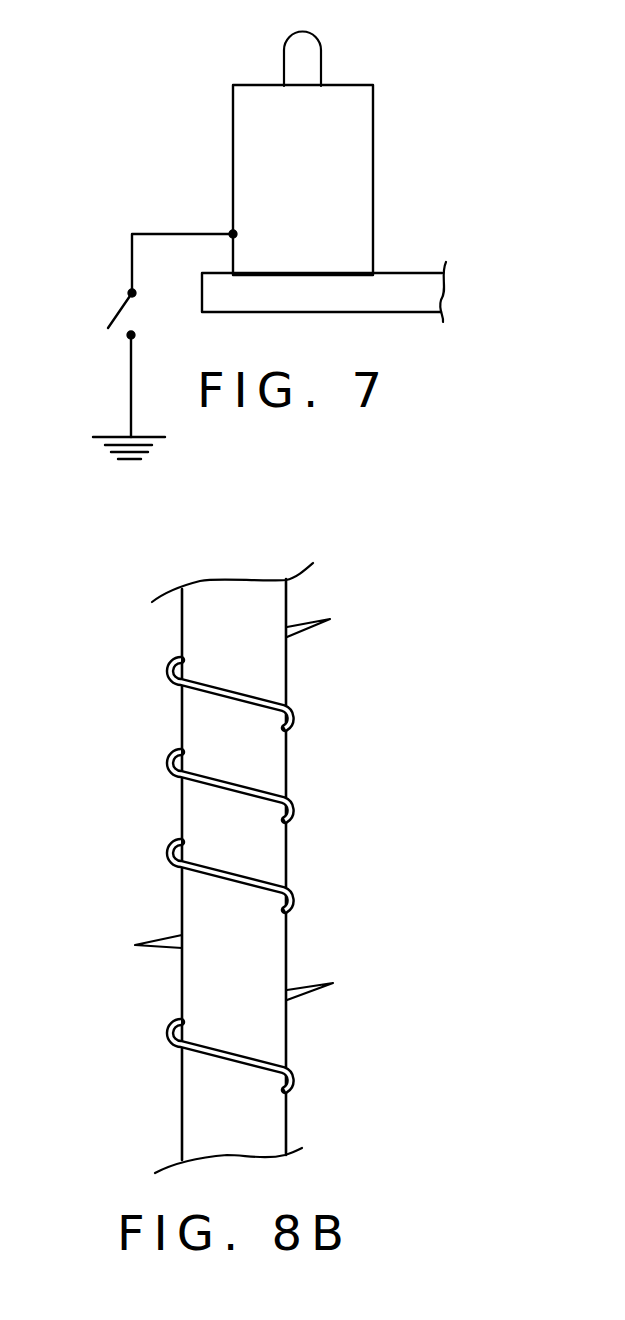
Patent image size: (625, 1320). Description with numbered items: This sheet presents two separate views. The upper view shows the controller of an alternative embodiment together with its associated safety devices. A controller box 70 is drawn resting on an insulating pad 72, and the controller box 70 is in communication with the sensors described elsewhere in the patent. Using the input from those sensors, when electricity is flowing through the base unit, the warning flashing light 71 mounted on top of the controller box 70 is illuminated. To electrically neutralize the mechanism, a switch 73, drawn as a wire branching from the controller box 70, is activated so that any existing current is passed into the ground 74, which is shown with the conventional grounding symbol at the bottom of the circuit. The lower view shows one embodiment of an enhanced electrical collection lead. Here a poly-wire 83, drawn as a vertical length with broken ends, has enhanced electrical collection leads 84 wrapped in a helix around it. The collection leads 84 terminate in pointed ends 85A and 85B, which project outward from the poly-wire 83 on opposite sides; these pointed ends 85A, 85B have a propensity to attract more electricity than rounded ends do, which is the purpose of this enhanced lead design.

In FIG. 7, the controller box 70 is at (343, 165).
In FIG. 7, the warning flashing light 71 is at (303, 52).
In FIG. 7, the insulating pad 72 is at (377, 293).
In FIG. 7, the switch 73 is at (120, 313).
In FIG. 7, the ground 74 is at (157, 459).
In FIG. 8B, the poly-wire 83 is at (217, 727).
In FIG. 8B, the enhanced electrical collection leads 84 is at (247, 787).
In FIG. 8B, the pointed end 85A is at (330, 620).
In FIG. 8B, the pointed end 85B is at (137, 947).